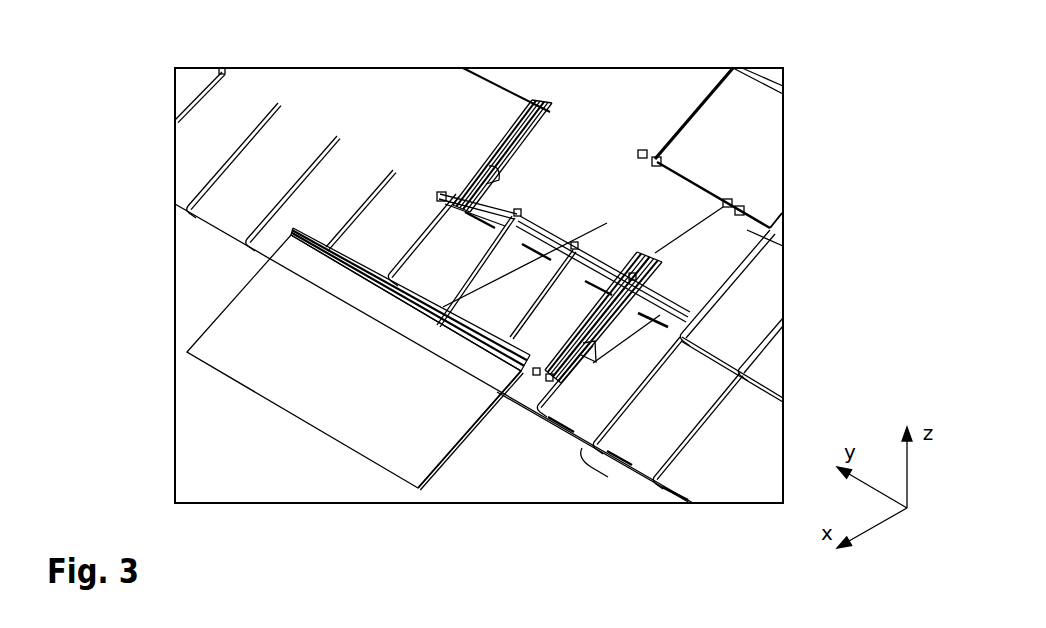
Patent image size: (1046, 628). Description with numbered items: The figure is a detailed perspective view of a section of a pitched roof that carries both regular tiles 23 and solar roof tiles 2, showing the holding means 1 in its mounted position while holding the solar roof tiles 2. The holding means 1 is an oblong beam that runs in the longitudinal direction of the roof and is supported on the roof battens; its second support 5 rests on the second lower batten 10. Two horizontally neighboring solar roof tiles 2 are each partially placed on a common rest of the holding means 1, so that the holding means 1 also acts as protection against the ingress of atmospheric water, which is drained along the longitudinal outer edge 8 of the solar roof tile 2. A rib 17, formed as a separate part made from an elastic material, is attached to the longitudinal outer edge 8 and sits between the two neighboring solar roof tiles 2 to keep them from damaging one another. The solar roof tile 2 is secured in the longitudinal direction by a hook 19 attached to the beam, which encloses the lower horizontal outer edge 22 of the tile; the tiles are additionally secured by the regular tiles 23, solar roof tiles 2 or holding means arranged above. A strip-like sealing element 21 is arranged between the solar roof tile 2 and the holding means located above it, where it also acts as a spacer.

The holding means 1 is at (484, 138).
The solar roof tile 2 is at (357, 109).
The second support 5 is at (493, 176).
The longitudinal outer edge 8 is at (240, 288).
The second lower batten 10 is at (486, 194).
The rib 17 is at (460, 440).
The hook 19 is at (643, 153).
The sealing element 21 is at (367, 281).
The lower horizontal outer edge 22 is at (328, 245).
The regular tile 23 is at (743, 318).